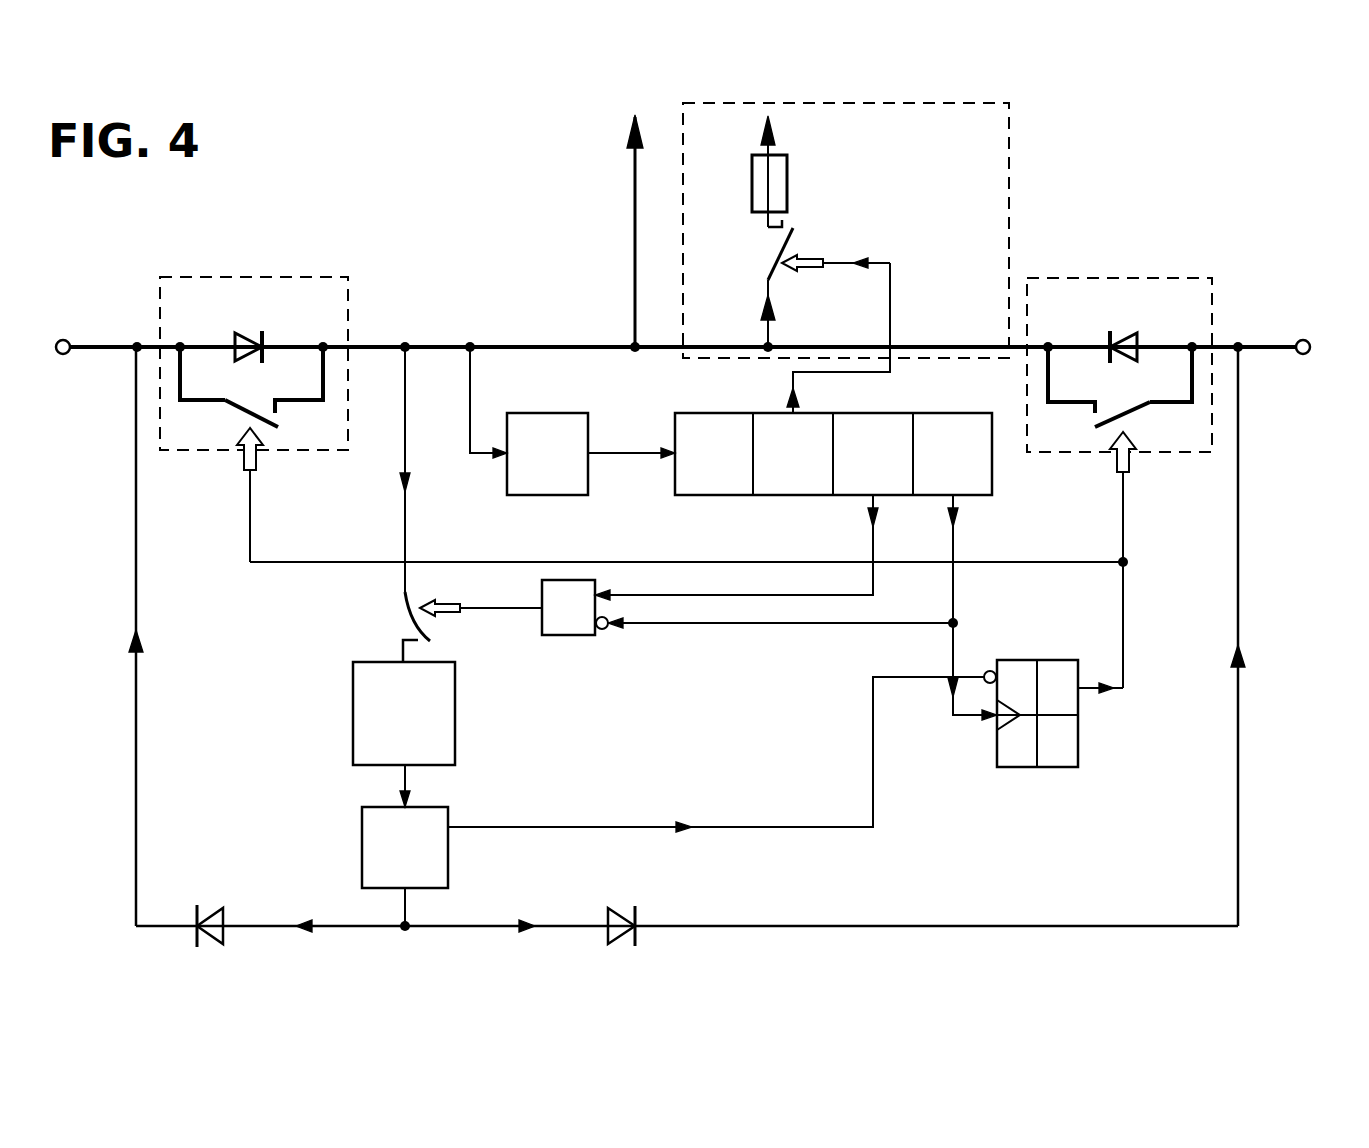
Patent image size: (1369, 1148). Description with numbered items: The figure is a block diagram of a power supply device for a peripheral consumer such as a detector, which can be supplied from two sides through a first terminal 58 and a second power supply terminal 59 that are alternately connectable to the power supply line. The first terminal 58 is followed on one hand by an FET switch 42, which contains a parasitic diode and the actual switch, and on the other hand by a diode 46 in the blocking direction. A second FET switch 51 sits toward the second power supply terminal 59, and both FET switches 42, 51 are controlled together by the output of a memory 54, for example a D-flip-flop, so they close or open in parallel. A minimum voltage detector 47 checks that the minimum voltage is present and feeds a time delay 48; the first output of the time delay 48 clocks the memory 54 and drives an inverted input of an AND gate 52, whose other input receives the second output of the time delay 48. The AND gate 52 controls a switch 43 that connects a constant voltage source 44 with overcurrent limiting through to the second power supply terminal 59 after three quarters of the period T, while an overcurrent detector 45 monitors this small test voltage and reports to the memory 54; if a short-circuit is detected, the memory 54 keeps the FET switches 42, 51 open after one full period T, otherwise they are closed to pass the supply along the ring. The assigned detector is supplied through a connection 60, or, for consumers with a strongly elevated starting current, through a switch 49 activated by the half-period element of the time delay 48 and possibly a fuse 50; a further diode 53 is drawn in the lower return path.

The FET switch 42 is at (253, 277).
The switch 43 is at (417, 622).
The constant voltage source 44 is at (455, 735).
The overcurrent detector 45 is at (448, 855).
The diode 46 is at (210, 912).
The minimum voltage detector 47 is at (547, 495).
The time delay 48 is at (992, 468).
The switch 49 is at (793, 240).
The fuse 50 is at (787, 165).
The FET switch 51 is at (1115, 278).
The AND gate 52 is at (562, 635).
The diode 53 is at (615, 910).
The memory 54 is at (1025, 767).
The first terminal 58 is at (63, 355).
The second power supply terminal 59 is at (1305, 355).
The connection 60 is at (635, 197).